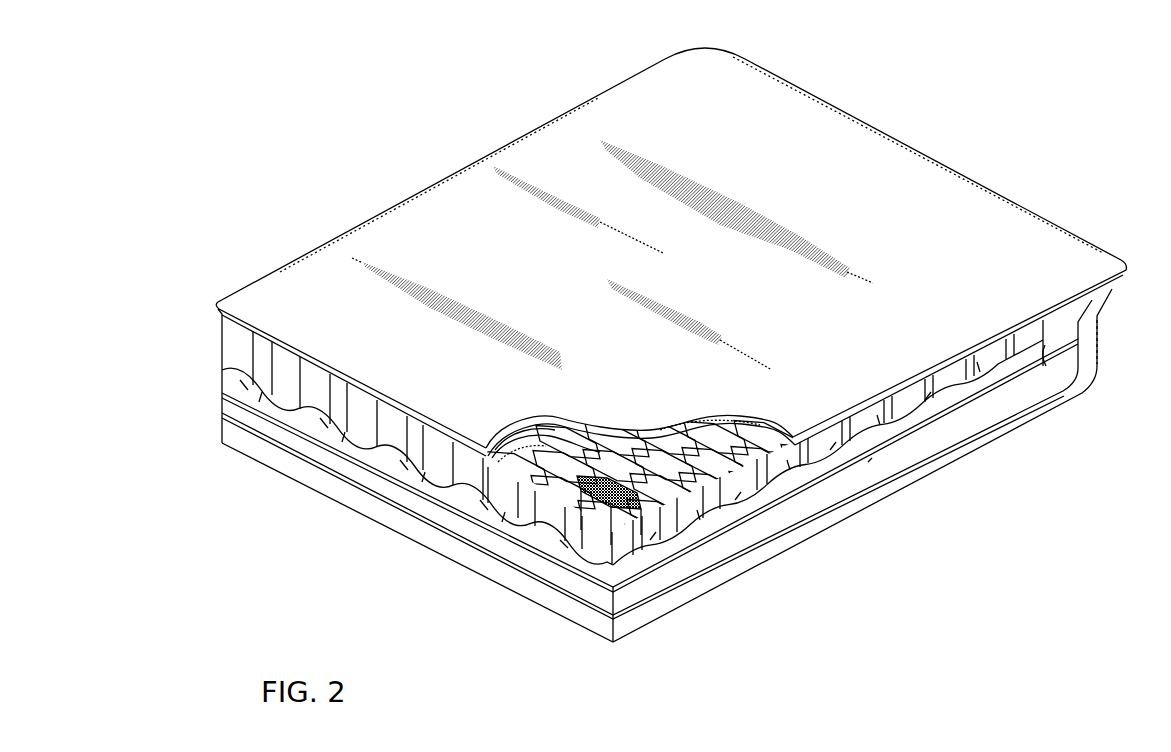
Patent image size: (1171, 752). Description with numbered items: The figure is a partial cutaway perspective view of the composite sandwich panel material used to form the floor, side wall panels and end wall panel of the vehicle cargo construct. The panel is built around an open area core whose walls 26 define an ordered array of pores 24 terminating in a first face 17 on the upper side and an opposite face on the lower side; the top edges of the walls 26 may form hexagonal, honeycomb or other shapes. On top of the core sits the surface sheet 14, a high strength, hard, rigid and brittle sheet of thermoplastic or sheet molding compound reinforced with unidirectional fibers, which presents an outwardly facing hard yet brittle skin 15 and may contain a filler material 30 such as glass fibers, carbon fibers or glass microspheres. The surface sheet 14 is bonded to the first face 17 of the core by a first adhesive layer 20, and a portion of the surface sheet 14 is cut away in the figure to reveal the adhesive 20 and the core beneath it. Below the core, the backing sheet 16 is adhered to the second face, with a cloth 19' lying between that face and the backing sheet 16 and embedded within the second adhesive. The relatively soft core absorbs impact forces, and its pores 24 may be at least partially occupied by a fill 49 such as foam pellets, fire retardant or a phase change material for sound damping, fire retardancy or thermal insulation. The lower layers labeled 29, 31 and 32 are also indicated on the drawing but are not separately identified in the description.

The surface sheet 14 is at (240, 300).
The skin 15 is at (510, 254).
The backing sheet 16 is at (932, 440).
The first face 17 is at (571, 452).
The cloth 19' is at (890, 503).
The first adhesive layer 20 is at (536, 452).
The pores 24 is at (642, 472).
The walls 26 is at (664, 525).
The bottom plate 29 is at (716, 592).
The filler material 30 is at (512, 432).
The bottom edge 31 is at (609, 614).
The intermediate plate 32 is at (752, 515).
The fill 49 is at (613, 480).